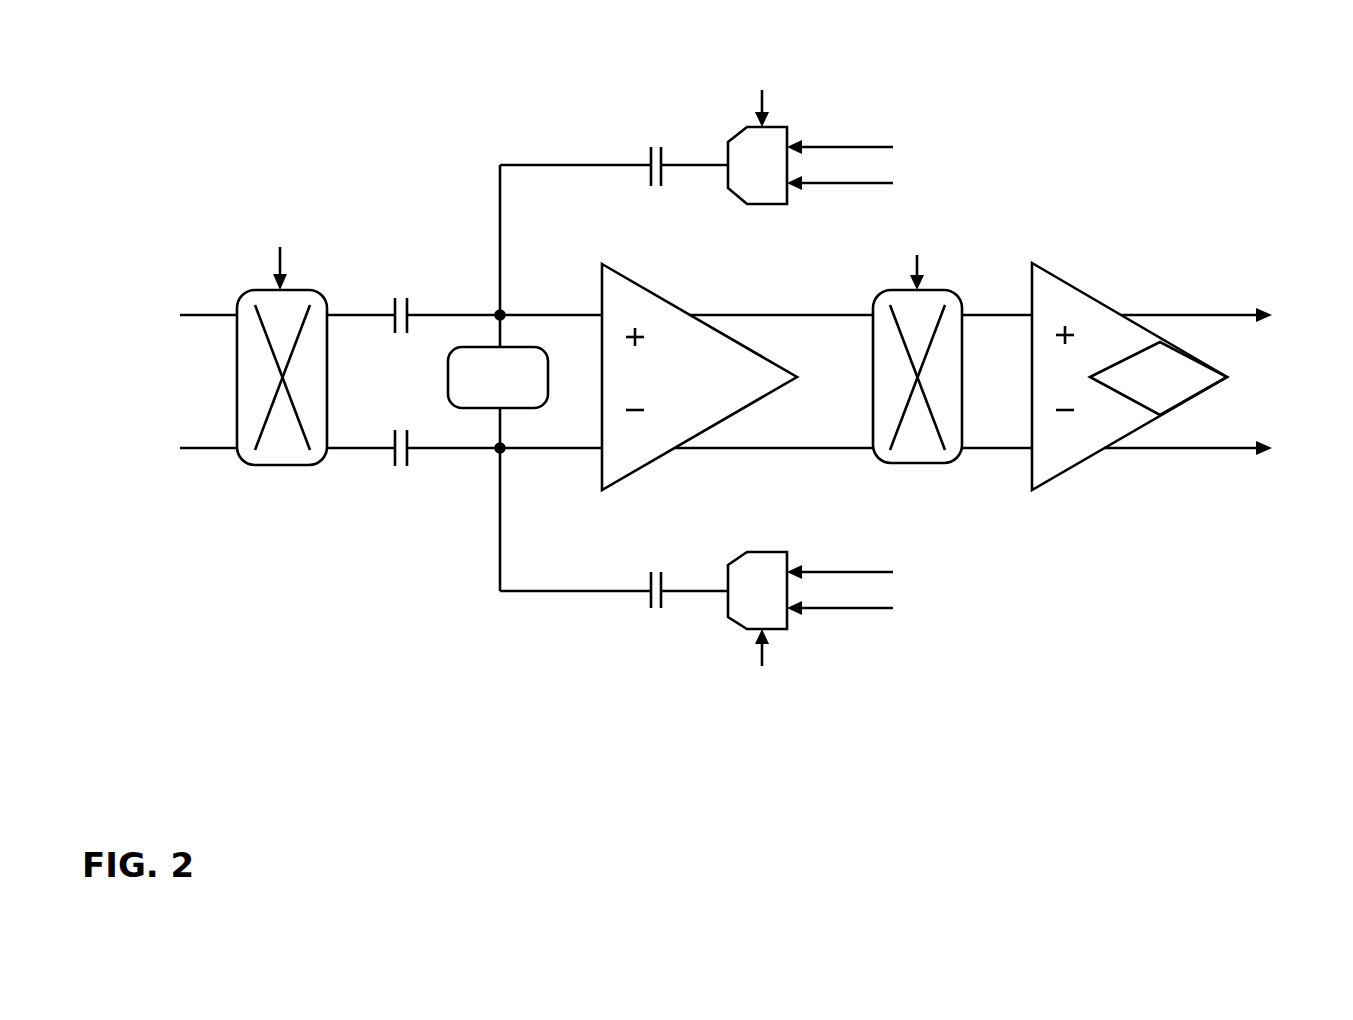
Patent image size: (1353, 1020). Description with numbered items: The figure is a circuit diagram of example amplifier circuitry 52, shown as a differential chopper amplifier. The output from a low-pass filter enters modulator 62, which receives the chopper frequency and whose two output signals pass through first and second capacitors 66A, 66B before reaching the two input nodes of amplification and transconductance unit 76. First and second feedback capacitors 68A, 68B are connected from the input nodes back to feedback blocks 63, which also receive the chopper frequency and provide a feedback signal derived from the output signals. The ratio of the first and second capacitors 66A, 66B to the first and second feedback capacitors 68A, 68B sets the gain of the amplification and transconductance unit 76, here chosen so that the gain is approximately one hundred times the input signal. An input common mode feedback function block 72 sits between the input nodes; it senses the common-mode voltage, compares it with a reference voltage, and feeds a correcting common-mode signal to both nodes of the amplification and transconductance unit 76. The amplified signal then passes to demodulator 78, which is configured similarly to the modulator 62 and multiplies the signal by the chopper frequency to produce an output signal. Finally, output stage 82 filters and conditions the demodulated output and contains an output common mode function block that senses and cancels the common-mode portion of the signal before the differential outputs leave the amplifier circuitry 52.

The amplifier circuitry 52 is at (274, 108).
The modulator 62 is at (272, 470).
The feedback 63 is at (788, 118).
The first capacitor 66A is at (400, 262).
The second capacitor 66B is at (405, 502).
The first feedback capacitor 68A is at (652, 108).
The second feedback capacitor 68B is at (656, 642).
The input common mode feedback function block 72 is at (441, 392).
The amplification and transconductance unit 76 is at (770, 408).
The demodulator 78 is at (907, 470).
The output stage 82 is at (1085, 470).